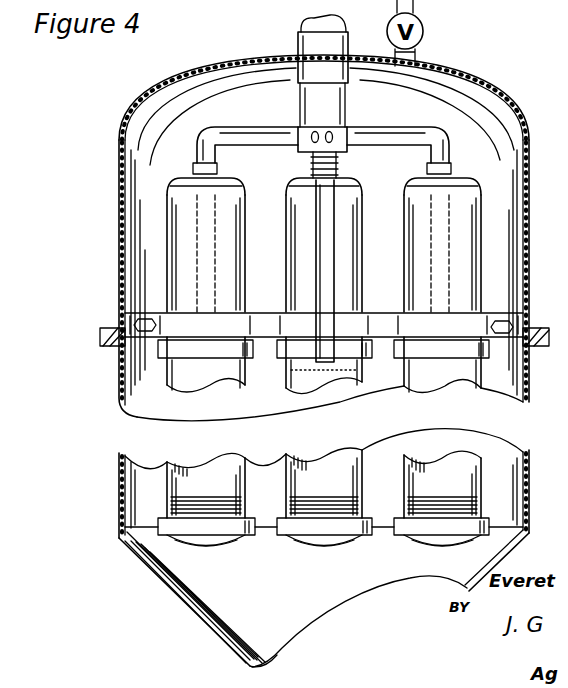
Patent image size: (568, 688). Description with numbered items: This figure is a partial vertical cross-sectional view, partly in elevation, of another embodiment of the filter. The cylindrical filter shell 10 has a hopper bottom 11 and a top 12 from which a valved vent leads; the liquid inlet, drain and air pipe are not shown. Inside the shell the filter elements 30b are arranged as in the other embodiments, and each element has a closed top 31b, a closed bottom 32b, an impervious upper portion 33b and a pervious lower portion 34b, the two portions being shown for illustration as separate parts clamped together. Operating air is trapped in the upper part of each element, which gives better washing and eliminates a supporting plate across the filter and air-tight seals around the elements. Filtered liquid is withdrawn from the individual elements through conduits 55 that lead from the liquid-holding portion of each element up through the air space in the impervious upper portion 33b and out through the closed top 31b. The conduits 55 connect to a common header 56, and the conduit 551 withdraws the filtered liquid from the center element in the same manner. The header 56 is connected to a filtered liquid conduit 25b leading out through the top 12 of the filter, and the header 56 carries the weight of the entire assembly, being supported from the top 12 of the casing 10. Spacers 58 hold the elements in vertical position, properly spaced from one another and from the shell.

The filter shell 10 is at (528, 268).
The hopper bottom 11 is at (196, 616).
The top 12 is at (464, 80).
The filtered liquid conduit 25b is at (298, 34).
The elements 30b is at (244, 200).
The closed top 31b is at (181, 175).
The closed bottom 32b is at (131, 543).
The impervious upper portion 33b is at (361, 190).
The pervious lower portion 34b is at (478, 383).
The conduits 55 is at (466, 180).
The conduit 551 is at (335, 264).
The header 56 is at (349, 114).
The spacers 58 is at (252, 289).